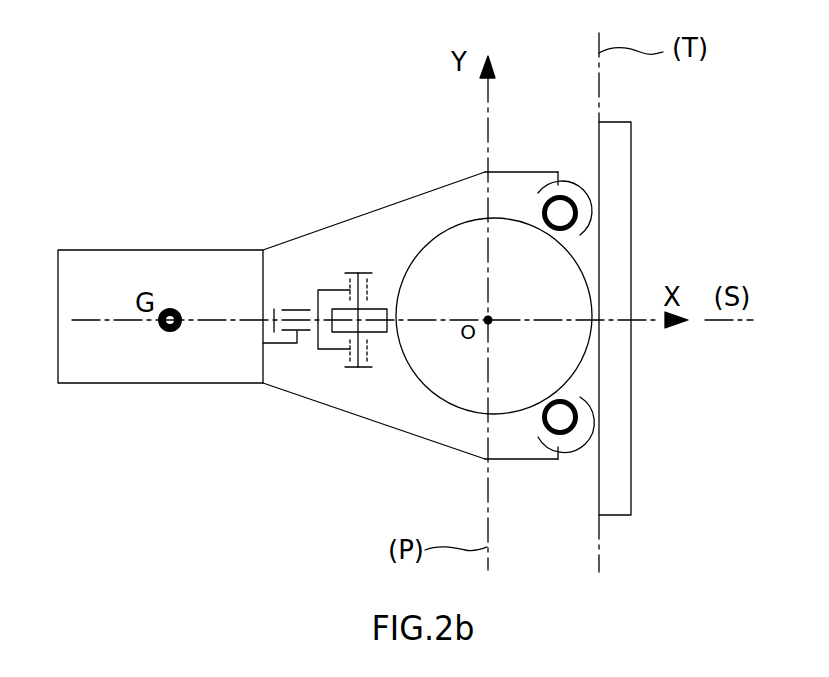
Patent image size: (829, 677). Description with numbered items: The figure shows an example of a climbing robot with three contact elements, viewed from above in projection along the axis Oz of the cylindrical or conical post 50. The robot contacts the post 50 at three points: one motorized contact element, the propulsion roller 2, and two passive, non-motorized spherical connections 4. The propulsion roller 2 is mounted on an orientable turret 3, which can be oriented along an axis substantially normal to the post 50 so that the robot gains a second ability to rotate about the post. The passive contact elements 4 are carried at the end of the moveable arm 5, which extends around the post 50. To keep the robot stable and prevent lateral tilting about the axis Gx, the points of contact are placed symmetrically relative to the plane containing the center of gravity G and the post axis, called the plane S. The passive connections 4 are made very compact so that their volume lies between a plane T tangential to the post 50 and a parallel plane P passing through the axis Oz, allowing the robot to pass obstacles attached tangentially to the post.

The propulsion roller 2 is at (382, 307).
The orientable turret 3 is at (295, 308).
The passive contact element with swivel element 4 is at (578, 213).
The moveable arm 5 is at (340, 221).
The cylindrical or conical post 50 is at (440, 398).